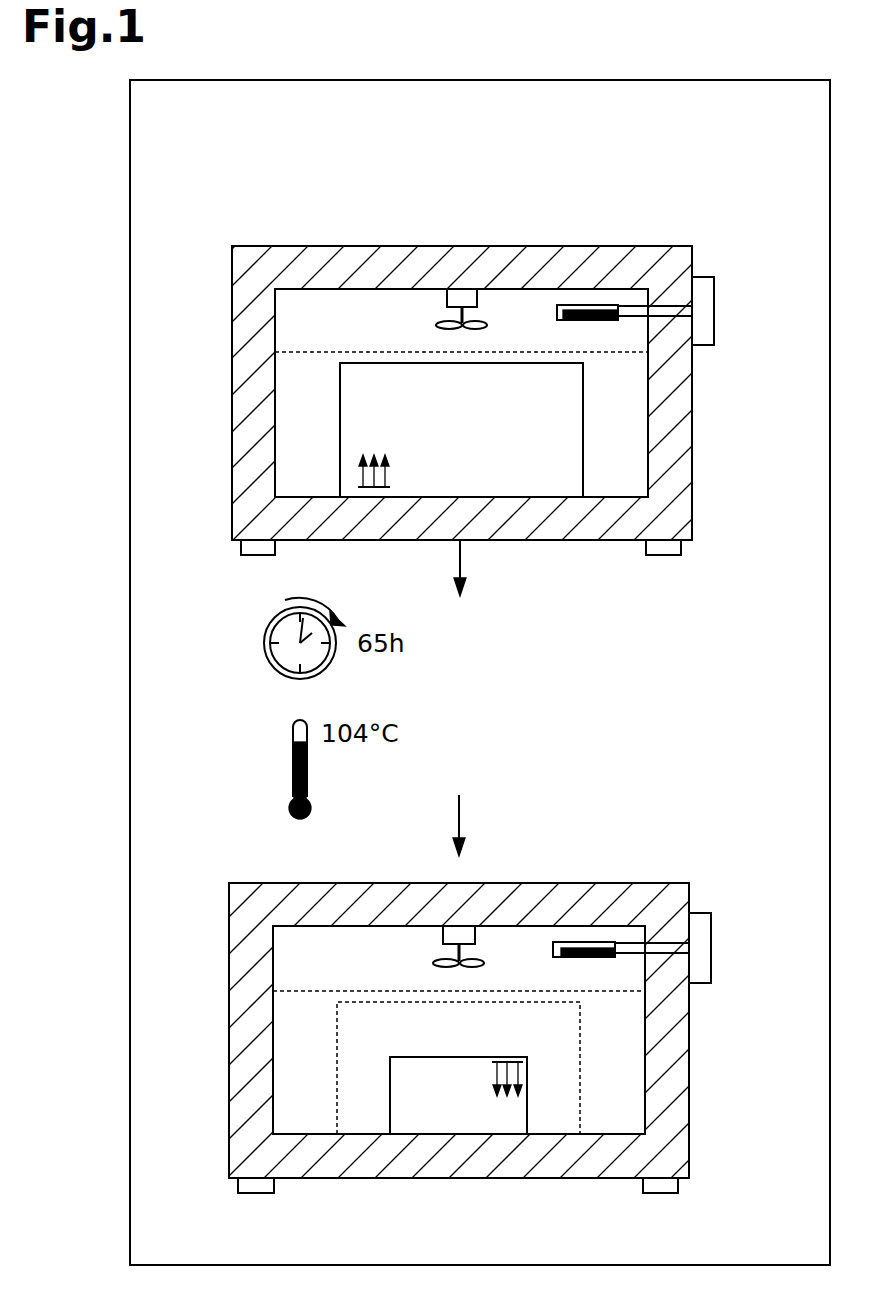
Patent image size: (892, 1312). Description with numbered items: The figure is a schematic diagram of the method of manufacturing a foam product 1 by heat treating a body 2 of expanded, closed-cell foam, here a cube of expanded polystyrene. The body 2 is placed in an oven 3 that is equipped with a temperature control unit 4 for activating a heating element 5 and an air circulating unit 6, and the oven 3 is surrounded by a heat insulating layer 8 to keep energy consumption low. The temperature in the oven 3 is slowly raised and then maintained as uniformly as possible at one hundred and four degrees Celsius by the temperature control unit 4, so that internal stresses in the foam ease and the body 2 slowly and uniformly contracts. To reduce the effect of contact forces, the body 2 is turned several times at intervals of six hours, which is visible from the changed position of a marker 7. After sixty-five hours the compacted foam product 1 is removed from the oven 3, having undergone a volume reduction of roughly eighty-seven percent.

The foam product 1 is at (418, 1152).
The body of expanded closed-cell foam 2 is at (402, 383).
The oven 3 is at (510, 220).
The temperature control unit 4 is at (703, 307).
The heating element 5 is at (588, 311).
The air circulating unit 6 is at (460, 298).
The marker 7 is at (357, 458).
The heat insulating layer 8 is at (653, 263).